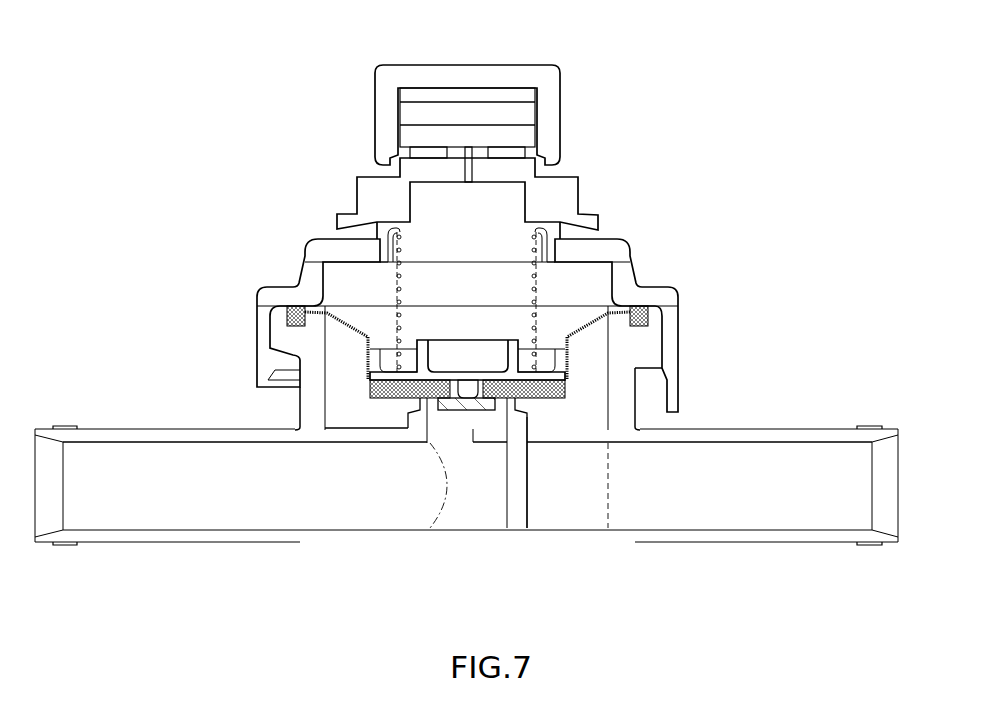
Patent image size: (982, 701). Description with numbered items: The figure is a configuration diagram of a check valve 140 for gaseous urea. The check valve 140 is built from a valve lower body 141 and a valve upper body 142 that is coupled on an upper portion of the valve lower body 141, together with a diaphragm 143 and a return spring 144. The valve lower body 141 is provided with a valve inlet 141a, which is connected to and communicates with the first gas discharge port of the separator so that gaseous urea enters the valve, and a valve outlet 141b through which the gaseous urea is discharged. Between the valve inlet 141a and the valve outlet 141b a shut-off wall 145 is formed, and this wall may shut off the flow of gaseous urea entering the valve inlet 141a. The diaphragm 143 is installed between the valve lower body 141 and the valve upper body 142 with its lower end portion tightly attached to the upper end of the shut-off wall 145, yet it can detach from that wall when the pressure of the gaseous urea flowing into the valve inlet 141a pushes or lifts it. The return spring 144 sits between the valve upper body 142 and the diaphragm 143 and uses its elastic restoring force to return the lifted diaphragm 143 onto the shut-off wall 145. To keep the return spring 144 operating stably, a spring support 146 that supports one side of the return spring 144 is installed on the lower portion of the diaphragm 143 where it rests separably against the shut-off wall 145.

The check valve 140 is at (273, 158).
The valve lower body 141 is at (300, 408).
The valve inlet 141a is at (811, 463).
The valve outlet 141b is at (99, 453).
The valve upper body 142 is at (303, 259).
The diaphragm 143 is at (565, 386).
The return spring 144 is at (538, 288).
The shut-off wall 145 is at (527, 497).
The spring support 146 is at (467, 410).